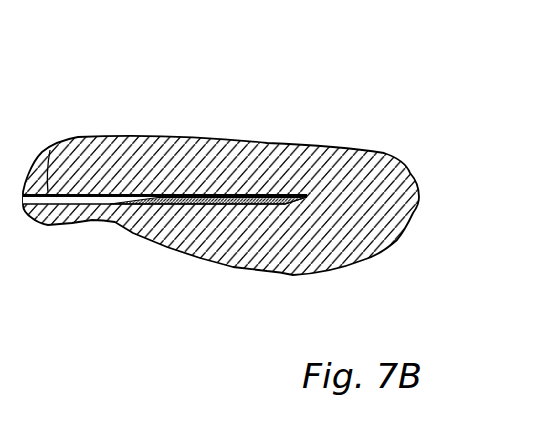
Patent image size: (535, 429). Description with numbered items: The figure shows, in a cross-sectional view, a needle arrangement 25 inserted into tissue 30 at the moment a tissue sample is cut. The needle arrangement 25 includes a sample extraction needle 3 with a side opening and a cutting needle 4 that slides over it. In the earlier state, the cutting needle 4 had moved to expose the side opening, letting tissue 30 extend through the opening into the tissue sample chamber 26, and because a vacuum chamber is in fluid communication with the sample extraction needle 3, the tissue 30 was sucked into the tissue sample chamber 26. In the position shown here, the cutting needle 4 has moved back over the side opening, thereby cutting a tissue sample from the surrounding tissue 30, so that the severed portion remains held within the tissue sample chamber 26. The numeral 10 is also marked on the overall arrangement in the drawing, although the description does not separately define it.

The insert body 10 is at (290, 193).
The nose portion 4 is at (78, 135).
The cutting edge plate 3 is at (160, 190).
The slot 25 is at (78, 200).
The tapered member 26 is at (197, 200).
The base body 30 is at (237, 240).